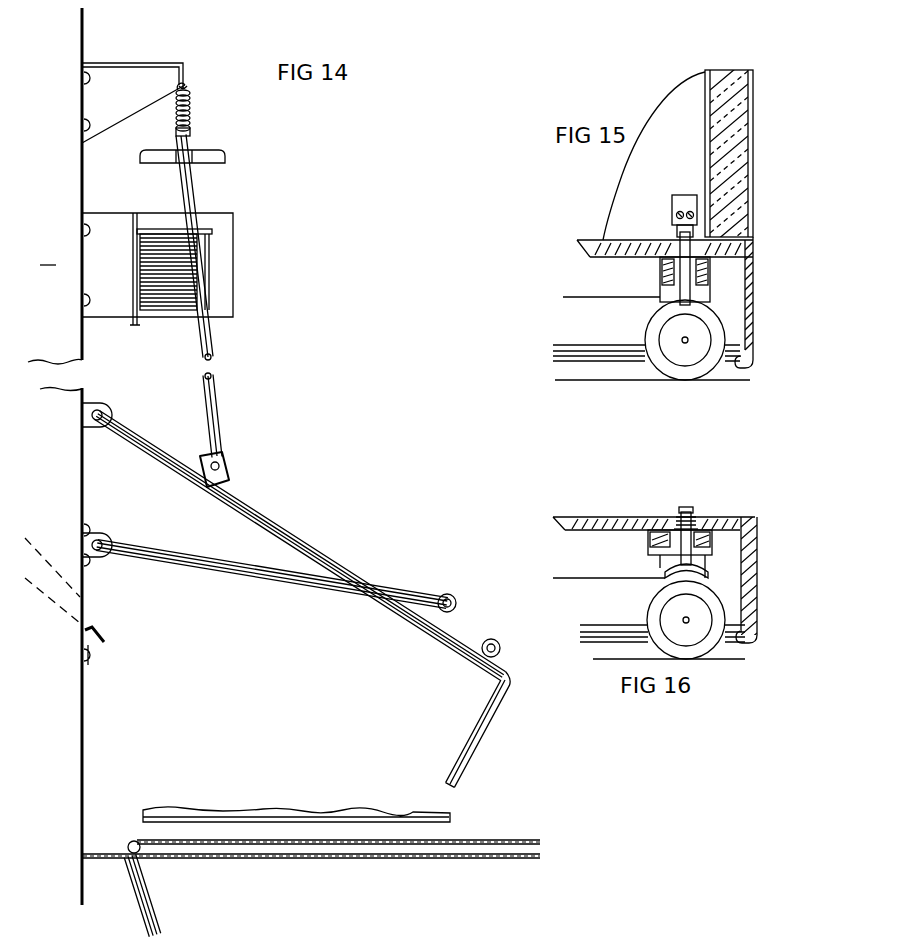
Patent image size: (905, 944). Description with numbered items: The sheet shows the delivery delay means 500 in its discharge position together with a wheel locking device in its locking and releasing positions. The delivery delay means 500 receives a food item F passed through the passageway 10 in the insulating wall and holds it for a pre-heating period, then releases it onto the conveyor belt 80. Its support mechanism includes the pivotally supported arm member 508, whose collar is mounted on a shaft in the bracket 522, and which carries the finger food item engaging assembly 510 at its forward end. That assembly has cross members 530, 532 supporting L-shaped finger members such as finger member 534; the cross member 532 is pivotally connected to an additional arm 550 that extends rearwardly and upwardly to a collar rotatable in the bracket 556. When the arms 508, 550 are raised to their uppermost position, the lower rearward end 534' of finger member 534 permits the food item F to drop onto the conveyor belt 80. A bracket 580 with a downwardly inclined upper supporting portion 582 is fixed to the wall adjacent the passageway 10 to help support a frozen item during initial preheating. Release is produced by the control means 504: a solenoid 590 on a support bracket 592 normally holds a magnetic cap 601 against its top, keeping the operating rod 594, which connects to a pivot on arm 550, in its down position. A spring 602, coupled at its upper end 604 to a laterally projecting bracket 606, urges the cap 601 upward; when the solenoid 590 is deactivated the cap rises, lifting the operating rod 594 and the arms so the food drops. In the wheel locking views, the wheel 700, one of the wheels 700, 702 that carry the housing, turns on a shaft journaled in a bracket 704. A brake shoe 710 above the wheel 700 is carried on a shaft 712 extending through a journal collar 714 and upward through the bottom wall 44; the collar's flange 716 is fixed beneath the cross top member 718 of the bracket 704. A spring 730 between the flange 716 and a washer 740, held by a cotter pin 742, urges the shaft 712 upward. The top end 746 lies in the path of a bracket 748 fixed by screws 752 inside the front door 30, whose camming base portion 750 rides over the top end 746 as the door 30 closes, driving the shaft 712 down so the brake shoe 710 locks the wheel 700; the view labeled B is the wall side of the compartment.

In FIG. 14, the passageway 10 is at (47, 569).
In FIG. 15, the front door 30 is at (727, 58).
In FIG. 16, the bottom wall 44 is at (570, 517).
In FIG. 14, the conveyor belt 80 is at (358, 858).
In FIG. 14, the delivery delay means 500 is at (324, 252).
In FIG. 14, the control means 504 is at (250, 267).
In FIG. 14, the arm member 508 is at (250, 575).
In FIG. 14, the finger food item engaging assembly 510 is at (455, 723).
In FIG. 14, the bracket 522 is at (88, 548).
In FIG. 14, the cross member 530 is at (450, 594).
In FIG. 14, the cross member 532 is at (500, 642).
In FIG. 14, the L-shaped finger member 534 is at (494, 730).
In FIG. 14, the lower rearward end of finger 534' is at (479, 794).
In FIG. 14, the additional arm 550 is at (303, 533).
In FIG. 14, the bracket 556 is at (89, 423).
In FIG. 14, the bracket 580 is at (82, 662).
In FIG. 14, the downwardly inclined upper supporting portion 582 is at (104, 636).
In FIG. 14, the solenoid 590 is at (150, 232).
In FIG. 14, the support bracket 592 is at (82, 212).
In FIG. 14, the operating rod 594 is at (221, 400).
In FIG. 14, the magnetic cap 601 is at (227, 161).
In FIG. 14, the spring 602 is at (196, 119).
In FIG. 14, the upper end of spring 604 is at (190, 86).
In FIG. 14, the laterally projecting bracket 606 is at (123, 73).
In FIG. 15, the wheel 700 is at (695, 380).
In FIG. 15, the wheel 702 is at (683, 343).
In FIG. 16, the bracket 704 is at (670, 582).
In FIG. 16, the brake shoe 710 is at (668, 570).
In FIG. 16, the shaft 712 is at (672, 556).
In FIG. 16, the journal collar 714 is at (736, 533).
In FIG. 16, the flange 716 is at (660, 538).
In FIG. 16, the cross top member 718 is at (650, 528).
In FIG. 16, the spring 730 is at (704, 526).
In FIG. 16, the washer 740 is at (682, 508).
In FIG. 16, the cotter pin 742 is at (696, 512).
In FIG. 16, the top end of shaft 746 is at (689, 505).
In FIG. 15, the bracket 748 is at (688, 196).
In FIG. 15, the camming base portion 750 is at (676, 232).
In FIG. 15, the screws 752 is at (676, 212).
In FIG. 14, the back wall B is at (48, 257).
In FIG. 14, the food item F is at (296, 818).